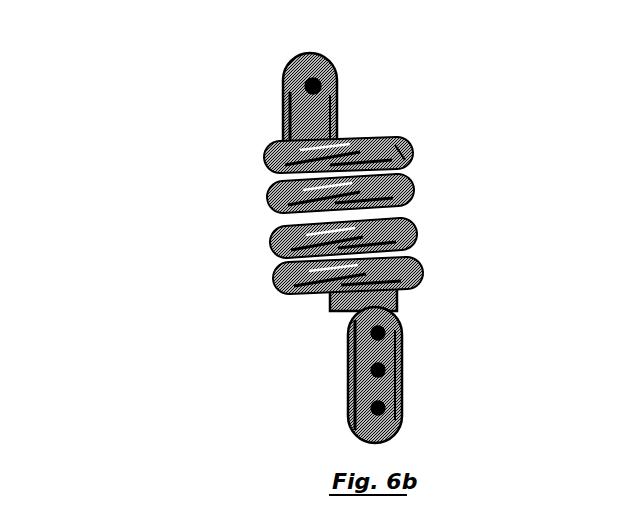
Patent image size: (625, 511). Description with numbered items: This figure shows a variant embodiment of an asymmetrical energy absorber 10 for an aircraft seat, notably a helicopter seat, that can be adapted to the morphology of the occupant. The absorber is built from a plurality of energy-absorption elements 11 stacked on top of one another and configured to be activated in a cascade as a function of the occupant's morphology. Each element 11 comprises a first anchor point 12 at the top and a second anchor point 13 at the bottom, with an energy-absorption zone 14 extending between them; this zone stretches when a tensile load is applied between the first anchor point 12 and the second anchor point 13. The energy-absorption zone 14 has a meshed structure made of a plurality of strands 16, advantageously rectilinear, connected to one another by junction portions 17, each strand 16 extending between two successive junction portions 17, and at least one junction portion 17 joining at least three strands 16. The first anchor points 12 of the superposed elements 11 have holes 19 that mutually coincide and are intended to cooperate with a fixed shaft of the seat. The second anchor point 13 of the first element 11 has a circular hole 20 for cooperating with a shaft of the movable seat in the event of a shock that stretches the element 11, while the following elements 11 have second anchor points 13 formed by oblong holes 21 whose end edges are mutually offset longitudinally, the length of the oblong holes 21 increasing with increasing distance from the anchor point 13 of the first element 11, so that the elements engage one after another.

The energy absorber 10 is at (124, 77).
The energy-absorption element 11 is at (263, 172).
The first anchor point 12 is at (342, 83).
The second anchor point 13 is at (400, 405).
The energy-absorption zone 14 is at (249, 194).
The strand 16 is at (405, 165).
The junction portion 17 is at (277, 288).
The hole 19 is at (288, 80).
The circular hole 20 is at (347, 333).
The oblong hole 21 is at (347, 372).